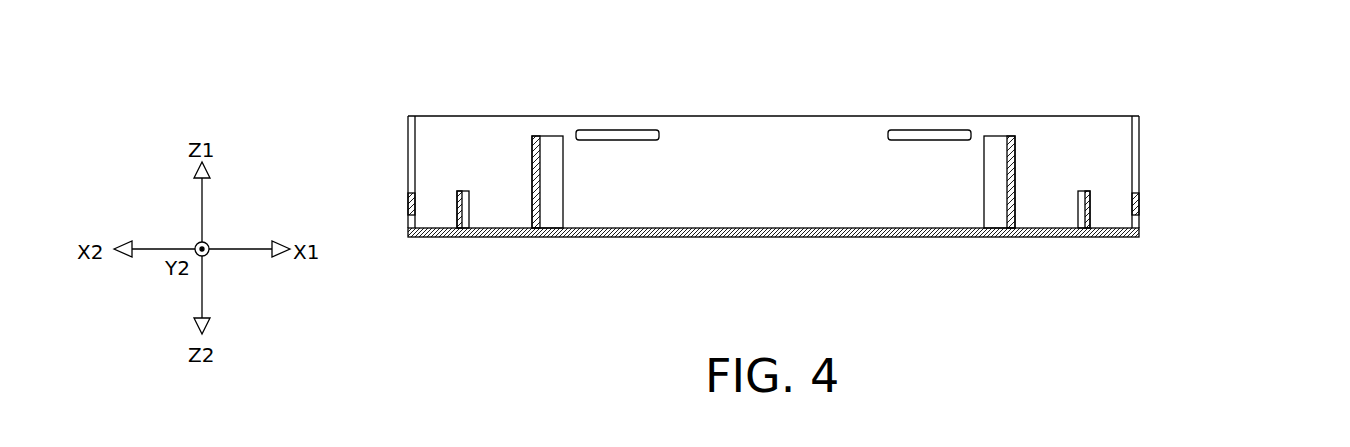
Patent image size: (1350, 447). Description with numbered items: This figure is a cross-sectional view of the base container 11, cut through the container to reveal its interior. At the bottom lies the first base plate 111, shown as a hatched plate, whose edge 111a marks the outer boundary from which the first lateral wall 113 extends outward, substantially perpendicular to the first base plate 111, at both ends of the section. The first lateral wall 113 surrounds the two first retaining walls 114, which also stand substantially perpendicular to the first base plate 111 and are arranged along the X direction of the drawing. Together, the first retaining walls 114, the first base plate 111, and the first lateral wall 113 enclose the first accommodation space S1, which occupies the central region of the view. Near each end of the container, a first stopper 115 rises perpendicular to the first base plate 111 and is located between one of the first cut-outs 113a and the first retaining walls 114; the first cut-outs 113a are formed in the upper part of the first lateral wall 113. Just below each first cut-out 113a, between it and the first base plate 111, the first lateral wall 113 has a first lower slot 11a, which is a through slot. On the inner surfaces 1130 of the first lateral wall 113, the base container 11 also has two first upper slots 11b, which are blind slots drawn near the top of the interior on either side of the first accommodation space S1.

The base container 11 is at (1325, 70).
The first lower slot 11a is at (406, 222).
The first upper slot 11b is at (619, 132).
The first base plate 111 is at (852, 234).
The edge of the first base plate 111a is at (404, 241).
The first lateral wall 113 is at (407, 203).
The first cut-out 113a is at (406, 150).
The inner surface of the first lateral wall 1130 is at (473, 144).
The first retaining wall 114 is at (531, 189).
The first stopper 115 is at (457, 205).
The first accommodation space S1 is at (837, 189).